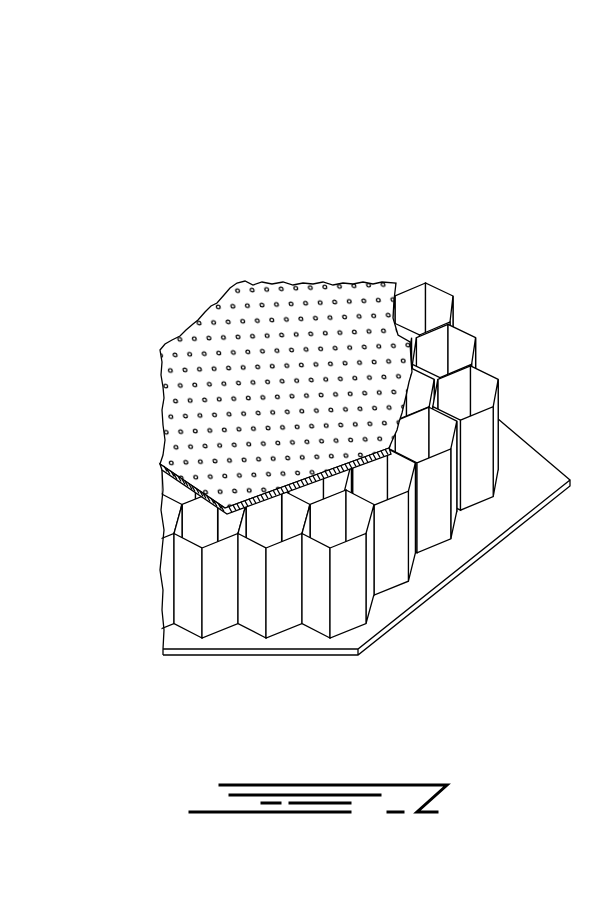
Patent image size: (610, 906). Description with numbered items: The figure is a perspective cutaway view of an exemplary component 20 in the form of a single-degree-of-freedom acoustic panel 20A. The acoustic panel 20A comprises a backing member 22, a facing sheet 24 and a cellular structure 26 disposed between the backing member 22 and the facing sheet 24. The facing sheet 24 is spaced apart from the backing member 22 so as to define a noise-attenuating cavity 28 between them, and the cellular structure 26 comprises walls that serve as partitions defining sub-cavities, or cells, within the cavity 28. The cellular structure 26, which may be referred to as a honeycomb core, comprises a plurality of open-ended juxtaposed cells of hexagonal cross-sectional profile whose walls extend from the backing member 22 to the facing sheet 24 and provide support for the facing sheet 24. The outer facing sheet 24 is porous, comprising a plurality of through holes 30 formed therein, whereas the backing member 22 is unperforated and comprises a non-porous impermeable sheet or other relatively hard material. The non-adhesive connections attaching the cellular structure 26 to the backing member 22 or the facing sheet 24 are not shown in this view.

The component 20 is at (319, 379).
The single-degree-of-freedom (SDOF) acoustic panel 20A is at (334, 452).
The backing member 22 is at (237, 638).
The facing sheet 24 is at (248, 359).
The cellular structure 26 is at (334, 471).
The cavity 28 is at (492, 353).
The through holes 30 is at (305, 302).